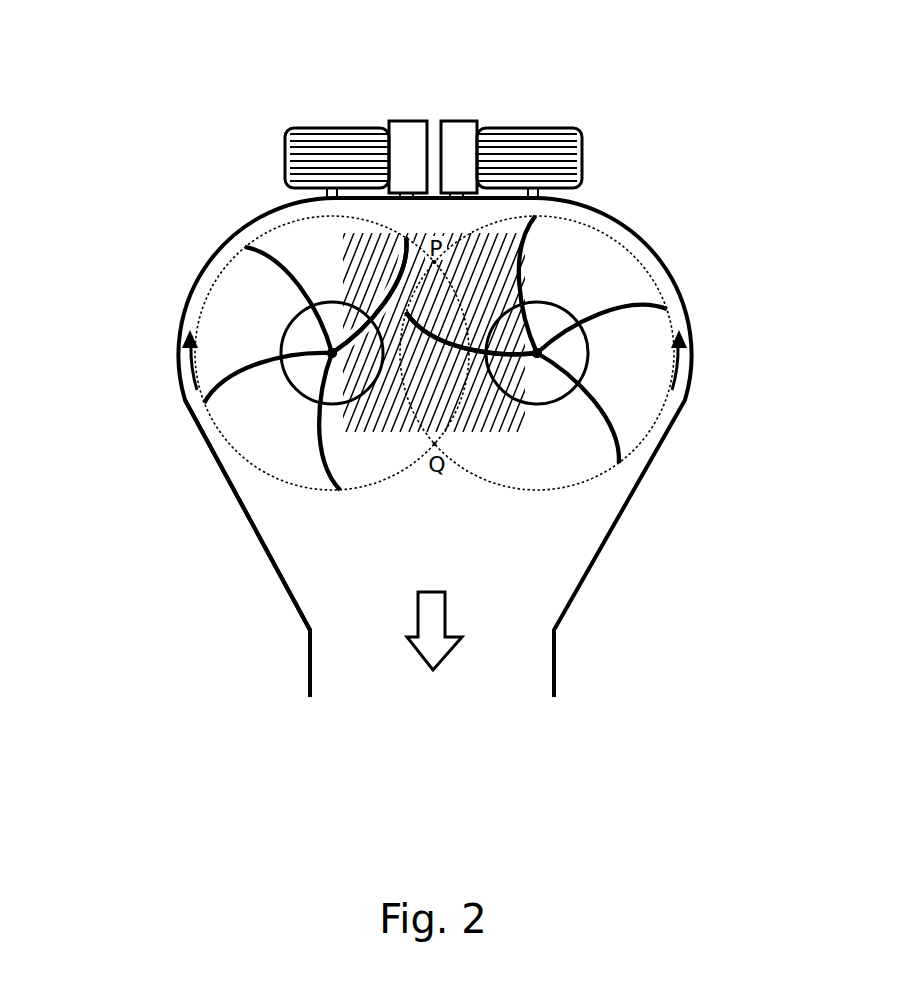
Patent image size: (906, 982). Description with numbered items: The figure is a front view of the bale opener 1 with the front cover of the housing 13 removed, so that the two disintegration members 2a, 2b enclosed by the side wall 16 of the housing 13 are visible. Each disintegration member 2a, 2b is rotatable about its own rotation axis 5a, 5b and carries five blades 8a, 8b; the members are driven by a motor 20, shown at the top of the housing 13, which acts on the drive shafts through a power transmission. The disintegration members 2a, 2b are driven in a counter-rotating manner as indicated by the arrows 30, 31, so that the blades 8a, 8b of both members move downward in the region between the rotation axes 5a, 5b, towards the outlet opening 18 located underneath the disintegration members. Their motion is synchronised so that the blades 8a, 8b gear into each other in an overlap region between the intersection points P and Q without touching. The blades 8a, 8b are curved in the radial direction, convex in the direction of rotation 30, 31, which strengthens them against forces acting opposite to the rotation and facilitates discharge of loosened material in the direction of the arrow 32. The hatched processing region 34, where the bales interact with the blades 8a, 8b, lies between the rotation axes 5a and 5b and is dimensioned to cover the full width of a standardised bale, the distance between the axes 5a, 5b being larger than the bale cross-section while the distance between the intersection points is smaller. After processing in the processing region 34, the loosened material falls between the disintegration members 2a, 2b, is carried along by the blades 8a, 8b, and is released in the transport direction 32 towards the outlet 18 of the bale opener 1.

The bale opener 1 is at (200, 132).
The disintegration member 2a is at (300, 337).
The disintegration member 2b is at (545, 313).
The rotation axis 5a is at (332, 353).
The rotation axis 5b is at (537, 353).
The blade 8a is at (400, 262).
The blade 8b is at (525, 262).
The housing 13 is at (278, 577).
The side wall 16 is at (240, 513).
The outlet opening 18 is at (370, 633).
The motor 20 is at (365, 153).
The arrow indicating direction of rotation 30 is at (178, 360).
The arrow indicating direction of rotation 31 is at (686, 358).
The transport direction 32 is at (432, 617).
The processing region 34 is at (437, 350).